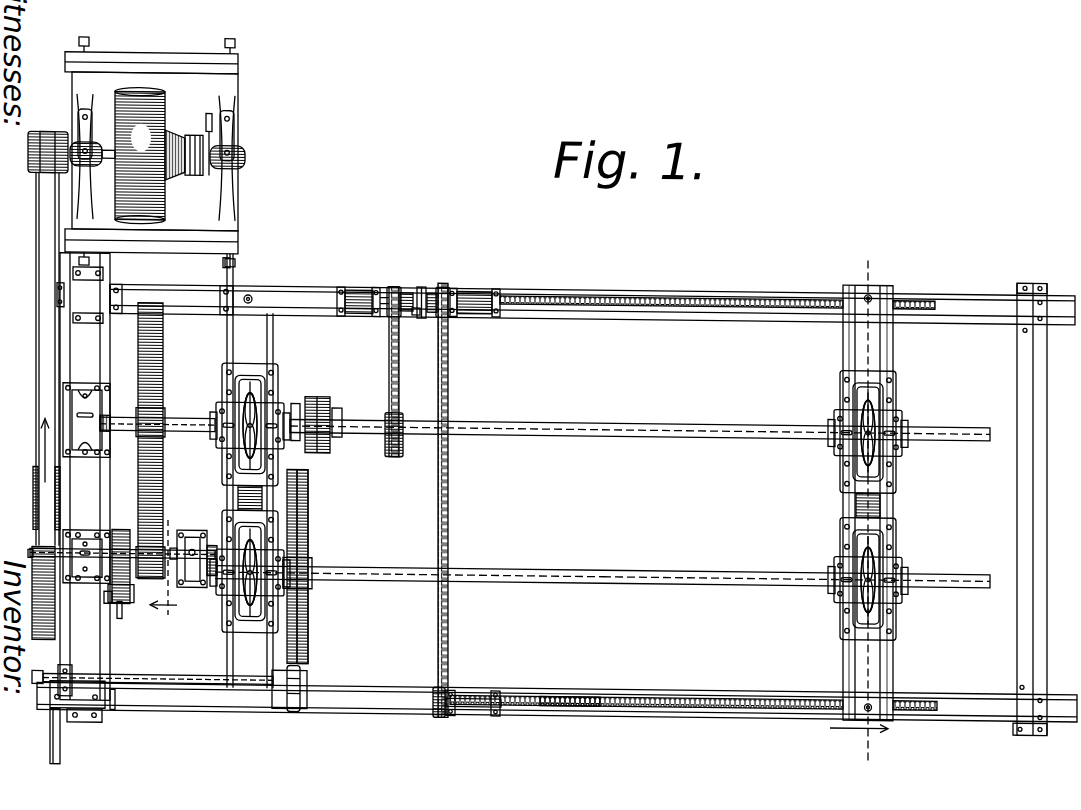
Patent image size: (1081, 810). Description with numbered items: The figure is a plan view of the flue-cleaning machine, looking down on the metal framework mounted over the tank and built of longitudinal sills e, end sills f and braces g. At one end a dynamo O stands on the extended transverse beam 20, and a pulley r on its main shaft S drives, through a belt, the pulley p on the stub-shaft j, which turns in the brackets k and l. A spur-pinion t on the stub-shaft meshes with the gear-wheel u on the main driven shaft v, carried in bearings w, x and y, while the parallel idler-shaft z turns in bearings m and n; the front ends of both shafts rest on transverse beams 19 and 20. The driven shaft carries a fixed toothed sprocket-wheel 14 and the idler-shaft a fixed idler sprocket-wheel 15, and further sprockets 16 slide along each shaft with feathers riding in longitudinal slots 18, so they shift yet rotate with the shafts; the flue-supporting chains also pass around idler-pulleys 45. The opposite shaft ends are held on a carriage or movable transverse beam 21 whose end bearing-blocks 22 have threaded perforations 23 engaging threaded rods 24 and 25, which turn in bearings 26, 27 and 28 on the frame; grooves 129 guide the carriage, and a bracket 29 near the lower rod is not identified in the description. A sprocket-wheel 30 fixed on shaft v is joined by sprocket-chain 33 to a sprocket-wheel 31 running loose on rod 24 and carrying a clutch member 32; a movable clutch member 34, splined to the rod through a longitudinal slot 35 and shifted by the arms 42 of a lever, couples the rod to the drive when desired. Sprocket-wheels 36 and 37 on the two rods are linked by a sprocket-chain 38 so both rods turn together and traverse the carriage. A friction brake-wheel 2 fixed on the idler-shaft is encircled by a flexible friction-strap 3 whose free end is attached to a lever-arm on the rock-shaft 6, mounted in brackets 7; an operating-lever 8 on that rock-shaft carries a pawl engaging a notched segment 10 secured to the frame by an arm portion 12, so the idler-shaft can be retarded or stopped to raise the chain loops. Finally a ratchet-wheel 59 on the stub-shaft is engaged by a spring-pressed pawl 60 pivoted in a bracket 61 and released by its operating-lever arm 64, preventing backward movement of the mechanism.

The friction brake-wheel 2 is at (309, 518).
The friction-strap 3 is at (302, 610).
The rock-shaft 6 is at (139, 676).
The metallic bearings or brackets 7 is at (63, 675).
The operating-lever 8 is at (39, 684).
The notched segment 10 is at (50, 748).
The arm portion 12 is at (62, 735).
The toothed sprocket-wheel 14 is at (254, 390).
The idler sprocket-wheel 15 is at (250, 603).
The toothed sprockets 16 is at (872, 403).
The longitudinal slots 18 is at (610, 420).
The transverse beam 19 is at (268, 337).
The transverse beam 20 is at (230, 333).
The carriage or movable transverse beam 21 is at (848, 340).
The end bearing-blocks 22 is at (860, 261).
The threaded perforations 23 is at (859, 743).
The threaded rod 24 is at (662, 292).
The threaded rod 25 is at (653, 701).
The bearing 26 is at (478, 286).
The bearing 27 is at (356, 285).
The bearing 28 is at (473, 705).
The bracket 29 is at (300, 705).
The sprocket-wheel 30 is at (401, 410).
The sprocket-wheel 31 is at (393, 281).
The clutch member 32 is at (404, 286).
The sprocket-chain 33 is at (400, 352).
The movable clutch member 34 is at (408, 303).
The longitudinal slot 35 is at (428, 287).
The sprocket-wheel 36 is at (434, 303).
The sprocket-wheel 37 is at (444, 683).
The sprocket-chain 38 is at (449, 496).
The arms 42 is at (444, 322).
The idler-pulleys 45 is at (248, 494).
The ratchet-wheel 59 is at (120, 530).
The spring-pressed pawl 60 is at (124, 612).
The bracket 61 is at (108, 600).
The operating-lever arm 64 is at (119, 617).
The grooves 129 is at (975, 297).
The pulley r is at (34, 131).
The main shaft S is at (105, 141).
The dynamo O is at (140, 155).
The end sills f is at (65, 251).
The braces g is at (47, 313).
The bearing w is at (85, 392).
The pulley p is at (33, 468).
The main driven shaft v is at (180, 417).
The bearing x is at (222, 405).
The gear-wheel u is at (160, 470).
The stub-shaft j is at (30, 551).
The spur-pinion t is at (173, 528).
The bearing m is at (227, 534).
The bearing or bracket k is at (87, 582).
The bearing or bracket l is at (198, 586).
The longitudinal sills e is at (580, 711).
The idler-shaft z is at (376, 564).
The bearing y is at (840, 408).
The bearing n is at (843, 533).